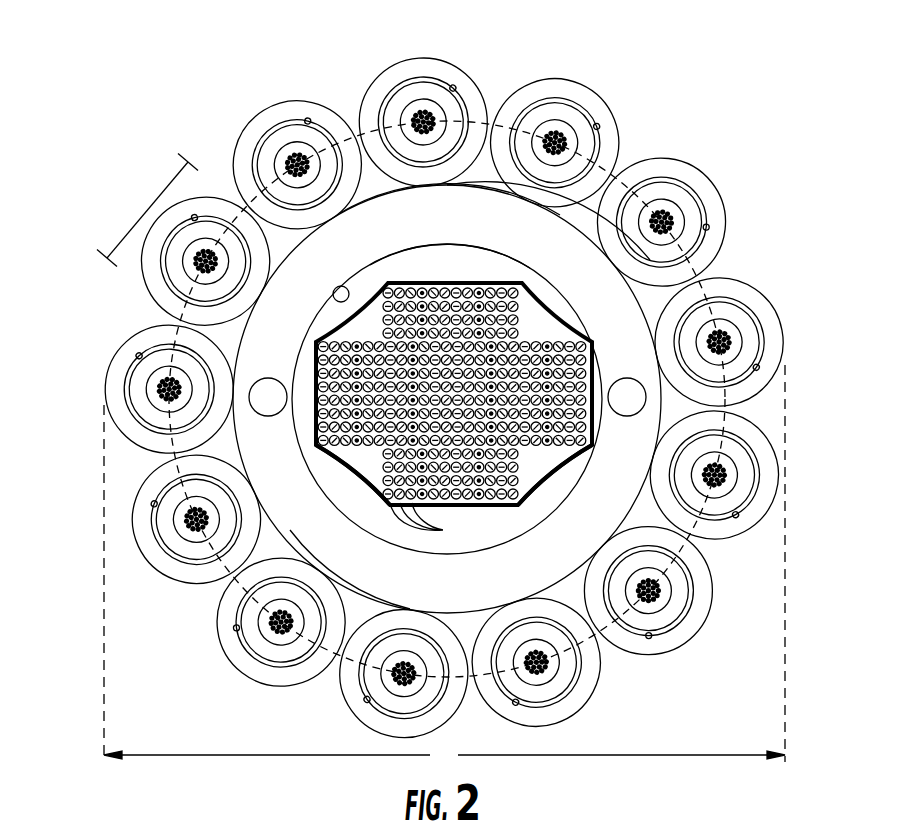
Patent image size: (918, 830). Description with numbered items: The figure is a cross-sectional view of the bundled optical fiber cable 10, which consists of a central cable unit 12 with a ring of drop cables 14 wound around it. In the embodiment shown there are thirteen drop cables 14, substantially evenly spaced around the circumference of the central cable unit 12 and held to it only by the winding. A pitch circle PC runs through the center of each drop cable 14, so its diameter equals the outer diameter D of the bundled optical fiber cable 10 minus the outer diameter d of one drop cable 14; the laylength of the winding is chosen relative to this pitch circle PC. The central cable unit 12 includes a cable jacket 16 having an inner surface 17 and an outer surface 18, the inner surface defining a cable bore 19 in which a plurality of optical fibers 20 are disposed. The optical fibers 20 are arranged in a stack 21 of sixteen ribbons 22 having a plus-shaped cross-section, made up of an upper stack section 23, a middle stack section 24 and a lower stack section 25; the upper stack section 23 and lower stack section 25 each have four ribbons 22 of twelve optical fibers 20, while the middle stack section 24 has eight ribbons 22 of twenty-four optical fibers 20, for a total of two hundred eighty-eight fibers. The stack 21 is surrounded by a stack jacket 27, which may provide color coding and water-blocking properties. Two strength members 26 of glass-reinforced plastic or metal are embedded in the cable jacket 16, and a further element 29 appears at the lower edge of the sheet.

The bundled optical fiber cable 10 is at (168, 130).
The central cable unit 12 is at (580, 225).
The drop cables 14 is at (728, 215).
The cable jacket 16 is at (477, 197).
The inner surface 17 is at (340, 286).
The outer surface 18 is at (365, 595).
The cable bore 19 is at (536, 504).
The optical fibers 20 is at (450, 512).
The stack 21 is at (402, 278).
The ribbons 22 is at (523, 455).
The upper stack section 23 is at (523, 317).
The middle stack section 24 is at (316, 378).
The lower stack section 25 is at (377, 455).
The strength members 26 is at (262, 403).
The stack jacket 27 is at (357, 473).
The cable element 29 is at (137, 822).
The pitch circle PC is at (182, 322).
The outer diameter of one drop cable d is at (147, 210).
The outer diameter of bundled optical fiber cable D is at (444, 568).